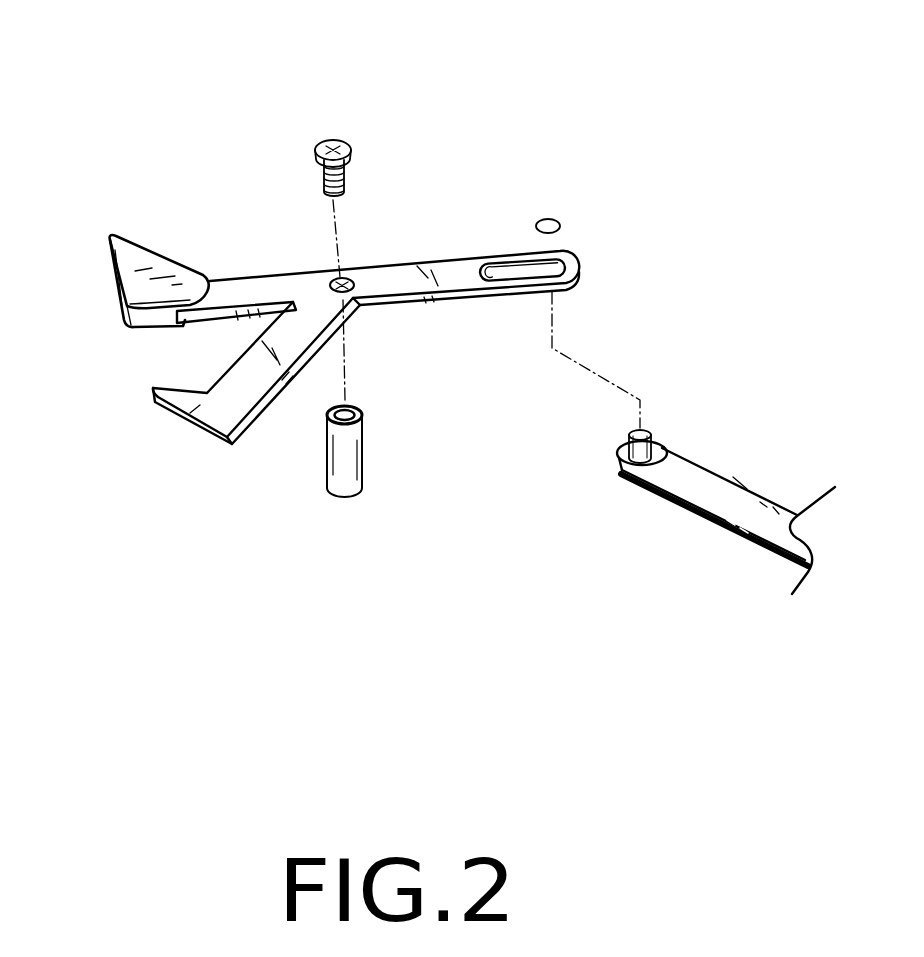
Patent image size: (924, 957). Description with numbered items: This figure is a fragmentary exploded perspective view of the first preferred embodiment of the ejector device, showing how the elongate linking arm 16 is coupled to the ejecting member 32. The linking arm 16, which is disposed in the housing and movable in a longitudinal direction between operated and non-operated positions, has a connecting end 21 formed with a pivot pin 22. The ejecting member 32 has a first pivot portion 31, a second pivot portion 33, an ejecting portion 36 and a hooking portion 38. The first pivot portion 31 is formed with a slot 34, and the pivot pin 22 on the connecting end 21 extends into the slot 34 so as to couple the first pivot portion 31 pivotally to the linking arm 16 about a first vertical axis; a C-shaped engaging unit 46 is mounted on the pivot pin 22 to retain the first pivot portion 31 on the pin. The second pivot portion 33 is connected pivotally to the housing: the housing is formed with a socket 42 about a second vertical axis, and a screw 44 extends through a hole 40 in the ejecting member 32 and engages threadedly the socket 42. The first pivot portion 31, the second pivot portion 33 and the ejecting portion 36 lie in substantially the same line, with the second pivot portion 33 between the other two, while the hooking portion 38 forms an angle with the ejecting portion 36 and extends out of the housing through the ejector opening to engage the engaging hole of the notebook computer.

The linking arm 16 is at (718, 485).
The connecting end 21 is at (682, 470).
The pivot pin 22 is at (650, 432).
The first pivot portion 31 is at (620, 180).
The ejecting member 32 is at (262, 457).
The second pivot portion 33 is at (275, 193).
The slot 34 is at (498, 268).
The ejecting portion 36 is at (130, 253).
The hooking portion 38 is at (202, 403).
The hole 40 is at (343, 277).
The socket 42 is at (345, 453).
The screw 44 is at (329, 148).
The C-shaped engaging unit 46 is at (560, 226).